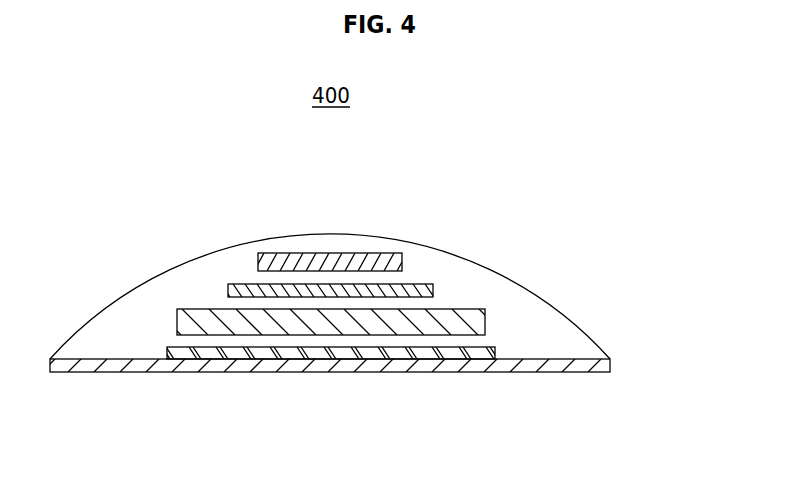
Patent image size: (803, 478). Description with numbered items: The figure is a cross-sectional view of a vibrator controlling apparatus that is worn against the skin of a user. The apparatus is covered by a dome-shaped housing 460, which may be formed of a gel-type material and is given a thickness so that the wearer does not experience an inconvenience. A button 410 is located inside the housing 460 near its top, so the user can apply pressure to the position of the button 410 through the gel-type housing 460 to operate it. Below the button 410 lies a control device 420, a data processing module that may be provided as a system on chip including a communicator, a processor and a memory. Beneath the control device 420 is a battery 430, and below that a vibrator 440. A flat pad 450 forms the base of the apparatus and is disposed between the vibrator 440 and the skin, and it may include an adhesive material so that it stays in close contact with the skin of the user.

The button 410 is at (329, 252).
The control device 420 is at (523, 230).
The battery 430 is at (485, 322).
The vibrator 440 is at (495, 354).
The pad 450 is at (533, 367).
The housing 460 is at (119, 318).